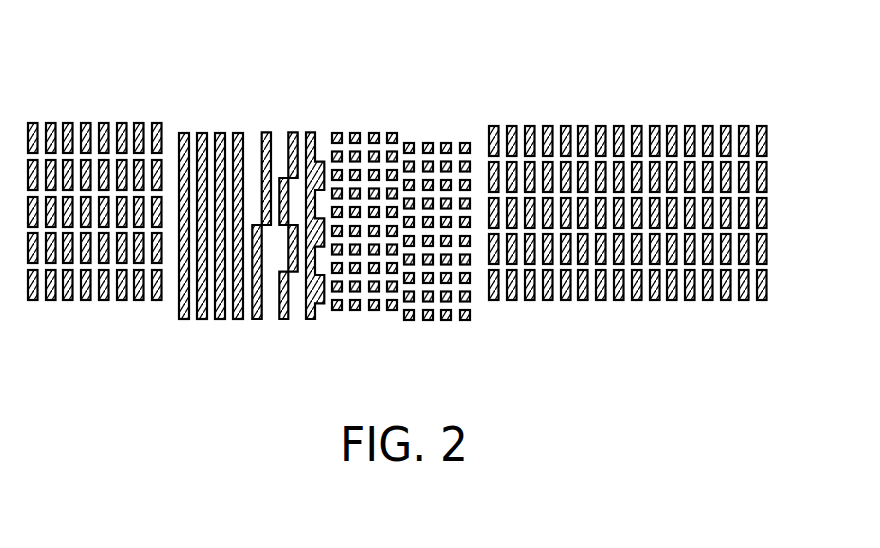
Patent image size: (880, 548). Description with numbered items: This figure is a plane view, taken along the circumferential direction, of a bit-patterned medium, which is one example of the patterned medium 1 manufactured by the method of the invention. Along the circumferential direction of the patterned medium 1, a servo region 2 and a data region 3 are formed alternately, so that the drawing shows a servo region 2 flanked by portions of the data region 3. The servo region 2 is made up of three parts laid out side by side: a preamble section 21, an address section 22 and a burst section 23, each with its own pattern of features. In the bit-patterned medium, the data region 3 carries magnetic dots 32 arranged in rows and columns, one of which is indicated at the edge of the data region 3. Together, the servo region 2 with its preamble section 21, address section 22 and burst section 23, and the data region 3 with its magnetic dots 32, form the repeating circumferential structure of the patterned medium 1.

The patterned medium 1 is at (109, 86).
The servo region 2 is at (466, 113).
The data region 3 is at (768, 113).
The preamble section 21 is at (243, 328).
The address section 22 is at (323, 328).
The burst section 23 is at (472, 328).
The magnetic dots 32 is at (766, 147).